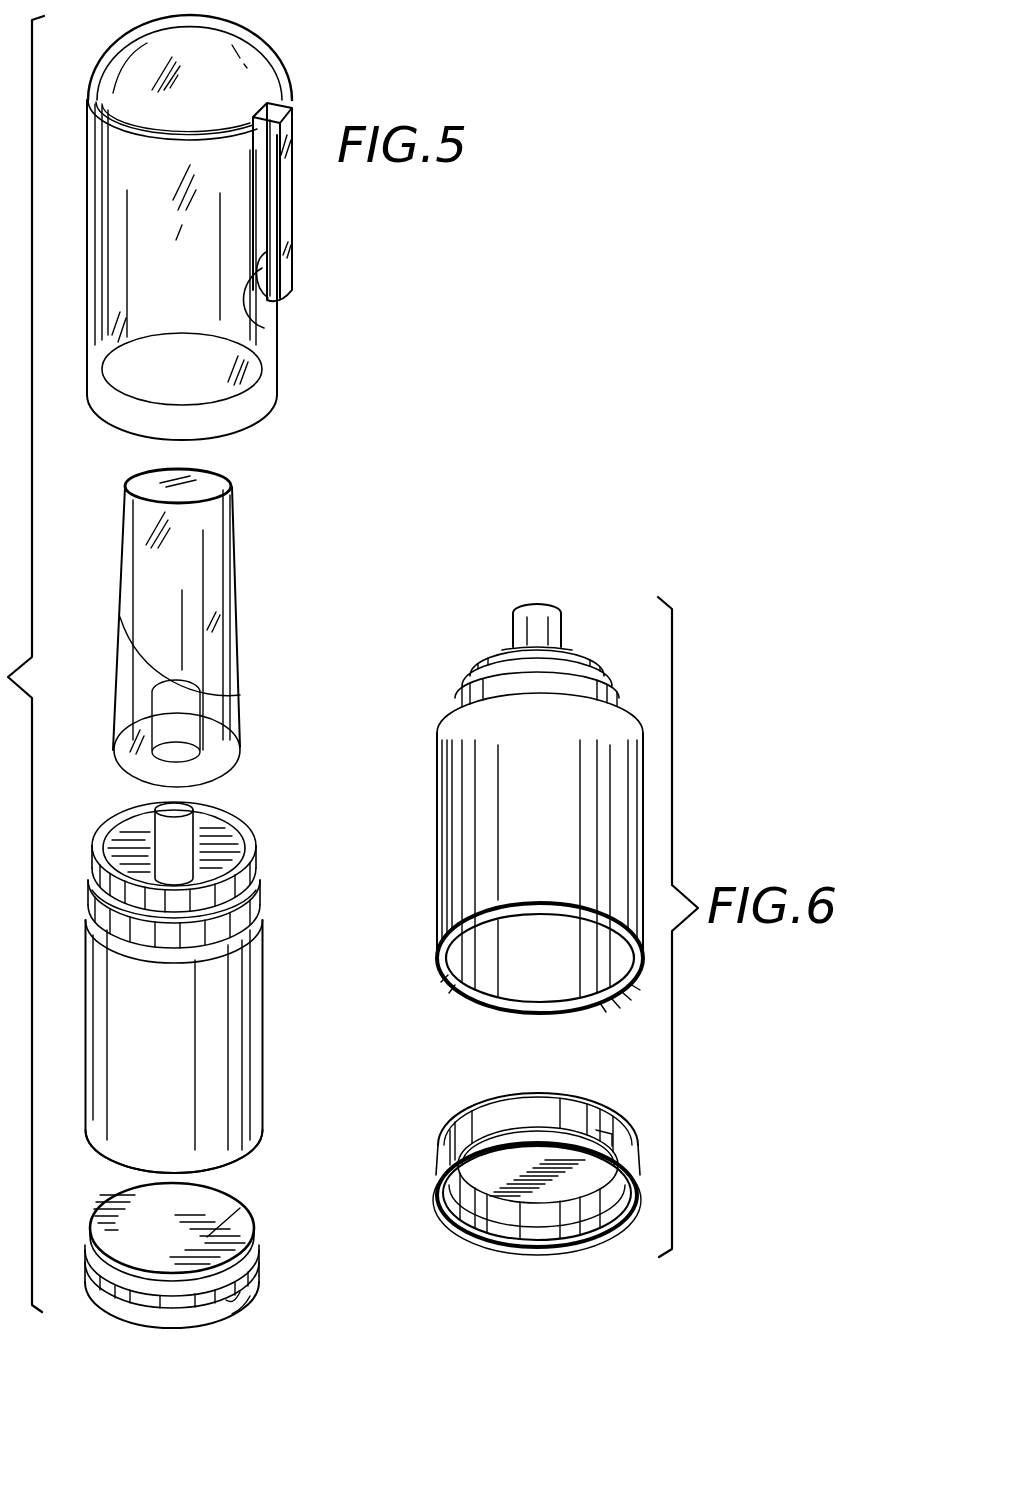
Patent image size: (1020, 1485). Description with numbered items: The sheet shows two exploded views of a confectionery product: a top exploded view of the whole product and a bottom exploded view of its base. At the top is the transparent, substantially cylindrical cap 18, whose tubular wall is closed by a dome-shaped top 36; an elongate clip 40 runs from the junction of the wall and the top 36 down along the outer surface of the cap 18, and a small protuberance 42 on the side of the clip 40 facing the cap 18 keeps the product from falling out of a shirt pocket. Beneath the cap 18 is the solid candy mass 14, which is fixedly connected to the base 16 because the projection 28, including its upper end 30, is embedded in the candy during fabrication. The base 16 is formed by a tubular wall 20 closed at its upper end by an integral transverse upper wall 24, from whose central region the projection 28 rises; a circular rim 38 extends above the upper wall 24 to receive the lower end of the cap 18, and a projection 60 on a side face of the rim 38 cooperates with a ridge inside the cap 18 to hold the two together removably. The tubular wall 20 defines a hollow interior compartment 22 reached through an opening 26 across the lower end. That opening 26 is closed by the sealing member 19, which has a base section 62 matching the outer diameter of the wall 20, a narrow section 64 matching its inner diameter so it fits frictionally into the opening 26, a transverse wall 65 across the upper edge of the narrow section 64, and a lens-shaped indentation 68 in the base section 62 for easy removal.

In FIG. 5, the solid candy mass 14 is at (217, 653).
In FIG. 5, the base 16 is at (215, 973).
In FIG. 6, the base 16 is at (518, 828).
In FIG. 5, the cap 18 is at (217, 227).
In FIG. 5, the sealing member 19 is at (191, 1278).
In FIG. 6, the sealing member 19 is at (513, 1189).
In FIG. 6, the tubular wall 20 is at (631, 979).
In FIG. 6, the interior compartment 22 is at (541, 960).
In FIG. 5, the transverse upper wall 24 is at (245, 845).
In FIG. 5, the opening 26 is at (240, 1156).
In FIG. 6, the opening 26 is at (560, 969).
In FIG. 5, the projection 28 is at (181, 849).
In FIG. 6, the projection 28 is at (577, 609).
In FIG. 5, the upper end 30 is at (200, 803).
In FIG. 5, the dome-shaped top 36 is at (250, 80).
In FIG. 5, the rim 38 is at (257, 950).
In FIG. 5, the clip 40 is at (275, 250).
In FIG. 5, the protuberance 42 is at (252, 317).
In FIG. 5, the projection 60 is at (260, 887).
In FIG. 5, the base section 62 is at (172, 1323).
In FIG. 6, the base section 62 is at (426, 1178).
In FIG. 5, the narrow section 64 is at (254, 1286).
In FIG. 6, the narrow section 64 is at (453, 1139).
In FIG. 5, the transverse wall 65 is at (240, 1208).
In FIG. 5, the lens-shaped indentation 68 is at (233, 1307).
In FIG. 6, the lens-shaped indentation 68 is at (631, 1218).